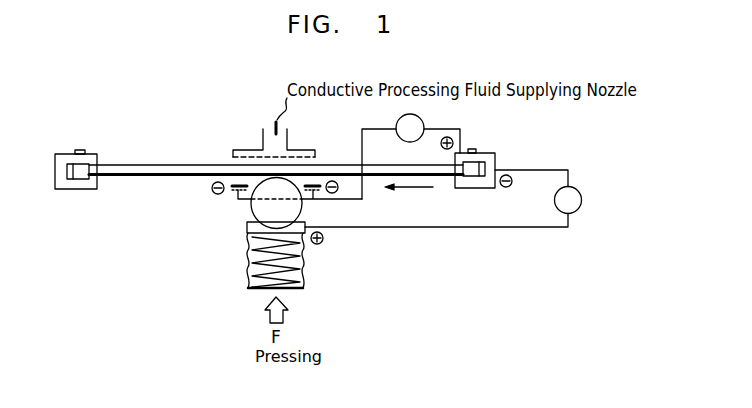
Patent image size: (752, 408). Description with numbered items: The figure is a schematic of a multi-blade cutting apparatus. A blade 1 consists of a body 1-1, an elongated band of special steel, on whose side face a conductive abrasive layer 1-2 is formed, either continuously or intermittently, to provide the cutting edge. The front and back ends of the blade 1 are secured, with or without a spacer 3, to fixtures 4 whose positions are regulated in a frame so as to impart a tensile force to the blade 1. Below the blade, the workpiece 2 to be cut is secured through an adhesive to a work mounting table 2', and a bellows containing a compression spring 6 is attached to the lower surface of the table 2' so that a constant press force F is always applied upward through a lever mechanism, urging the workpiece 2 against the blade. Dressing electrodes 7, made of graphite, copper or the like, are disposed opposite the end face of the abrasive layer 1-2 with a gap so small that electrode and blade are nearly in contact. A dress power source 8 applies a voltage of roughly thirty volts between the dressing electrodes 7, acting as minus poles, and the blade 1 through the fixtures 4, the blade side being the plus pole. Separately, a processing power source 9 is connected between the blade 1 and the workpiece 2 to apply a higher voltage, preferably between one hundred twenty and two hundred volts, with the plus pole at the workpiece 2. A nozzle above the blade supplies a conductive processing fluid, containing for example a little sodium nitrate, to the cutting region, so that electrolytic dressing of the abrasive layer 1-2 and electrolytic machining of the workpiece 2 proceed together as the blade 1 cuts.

The blade 1 is at (276, 161).
The body of the blade 1-1 is at (189, 164).
The abrasive layer 1-2 is at (144, 178).
The workpiece 2 is at (262, 211).
The work mounting table 2' is at (264, 245).
The spacer 3 is at (80, 176).
The fixture 4 is at (481, 161).
The compression spring 6 is at (305, 269).
The dressing electrode 7 is at (238, 190).
The dress power source 8 is at (412, 123).
The processing power source 9 is at (576, 199).